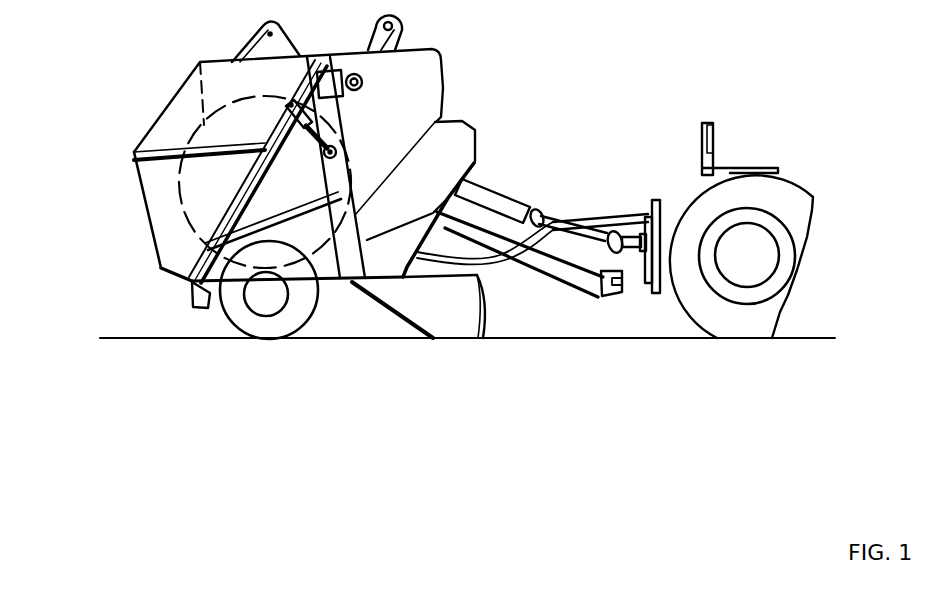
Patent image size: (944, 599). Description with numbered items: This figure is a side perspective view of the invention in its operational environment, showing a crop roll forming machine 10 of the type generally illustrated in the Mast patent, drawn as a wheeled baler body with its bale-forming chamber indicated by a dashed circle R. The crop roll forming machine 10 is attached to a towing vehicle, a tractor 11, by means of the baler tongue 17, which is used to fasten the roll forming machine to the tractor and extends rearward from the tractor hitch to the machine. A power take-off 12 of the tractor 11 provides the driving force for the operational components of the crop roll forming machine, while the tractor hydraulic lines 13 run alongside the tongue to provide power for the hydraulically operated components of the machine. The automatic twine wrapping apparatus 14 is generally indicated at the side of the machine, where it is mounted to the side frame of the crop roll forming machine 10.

The crop roll forming machine 10 is at (141, 119).
The tractor 11 is at (694, 166).
The power take-off 12 is at (557, 214).
The tractor hydraulic lines 13 is at (624, 212).
The automatic twine wrapping apparatus 14 is at (462, 120).
The baler tongue 17 is at (566, 280).
The bale R is at (198, 61).